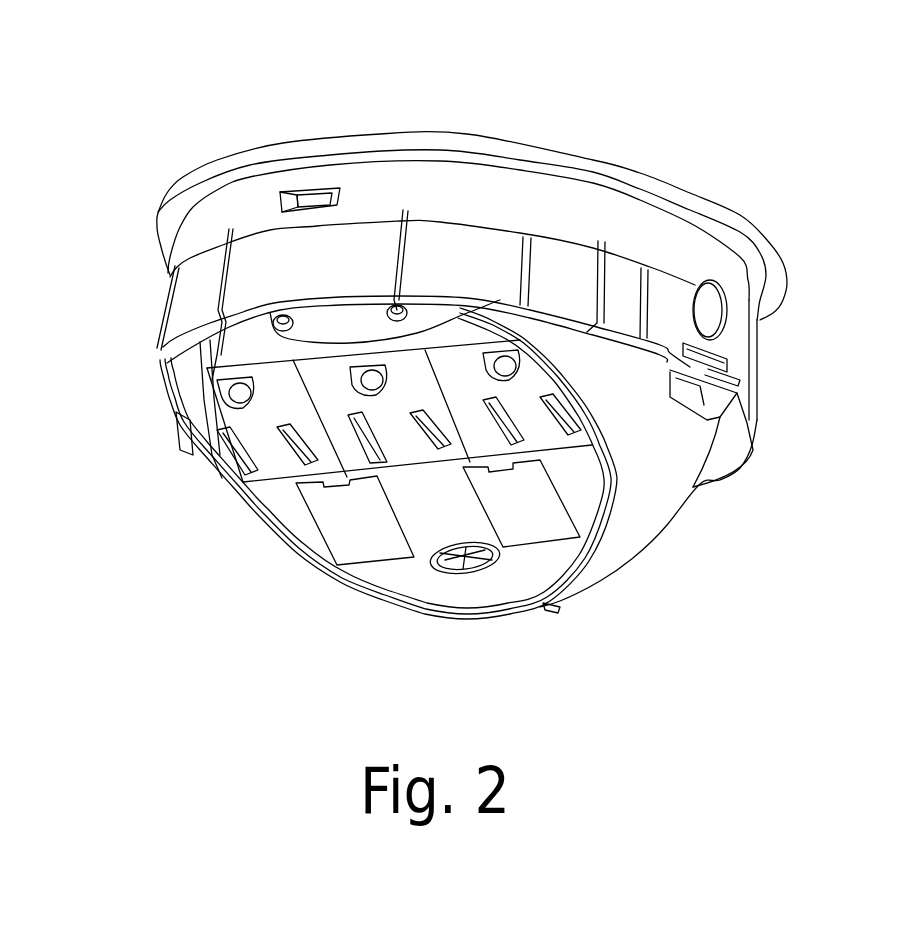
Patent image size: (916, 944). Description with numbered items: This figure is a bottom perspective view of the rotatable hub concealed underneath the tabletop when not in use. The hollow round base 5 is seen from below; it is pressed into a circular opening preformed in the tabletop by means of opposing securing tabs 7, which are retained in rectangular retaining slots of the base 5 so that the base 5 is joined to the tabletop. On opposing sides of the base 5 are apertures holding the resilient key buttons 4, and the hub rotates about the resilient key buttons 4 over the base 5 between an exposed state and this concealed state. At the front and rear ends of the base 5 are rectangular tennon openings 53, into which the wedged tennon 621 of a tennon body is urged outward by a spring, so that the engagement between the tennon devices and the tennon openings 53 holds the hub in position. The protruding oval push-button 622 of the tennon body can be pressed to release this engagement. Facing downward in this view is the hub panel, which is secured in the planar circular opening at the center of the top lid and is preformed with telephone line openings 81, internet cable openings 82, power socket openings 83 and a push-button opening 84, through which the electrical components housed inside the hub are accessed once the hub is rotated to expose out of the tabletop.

The base 5 is at (560, 203).
The rectangular tennon opening 53 is at (282, 195).
The wedged tennon 621 is at (313, 197).
The resilient key button 4 is at (713, 310).
The securing tab 7 is at (725, 400).
The power socket openings 83 is at (253, 417).
The telephone line openings 81 is at (340, 530).
The internet cable openings 82 is at (540, 517).
The push-button opening 84 is at (432, 570).
The protruding oval push-button 622 is at (483, 577).